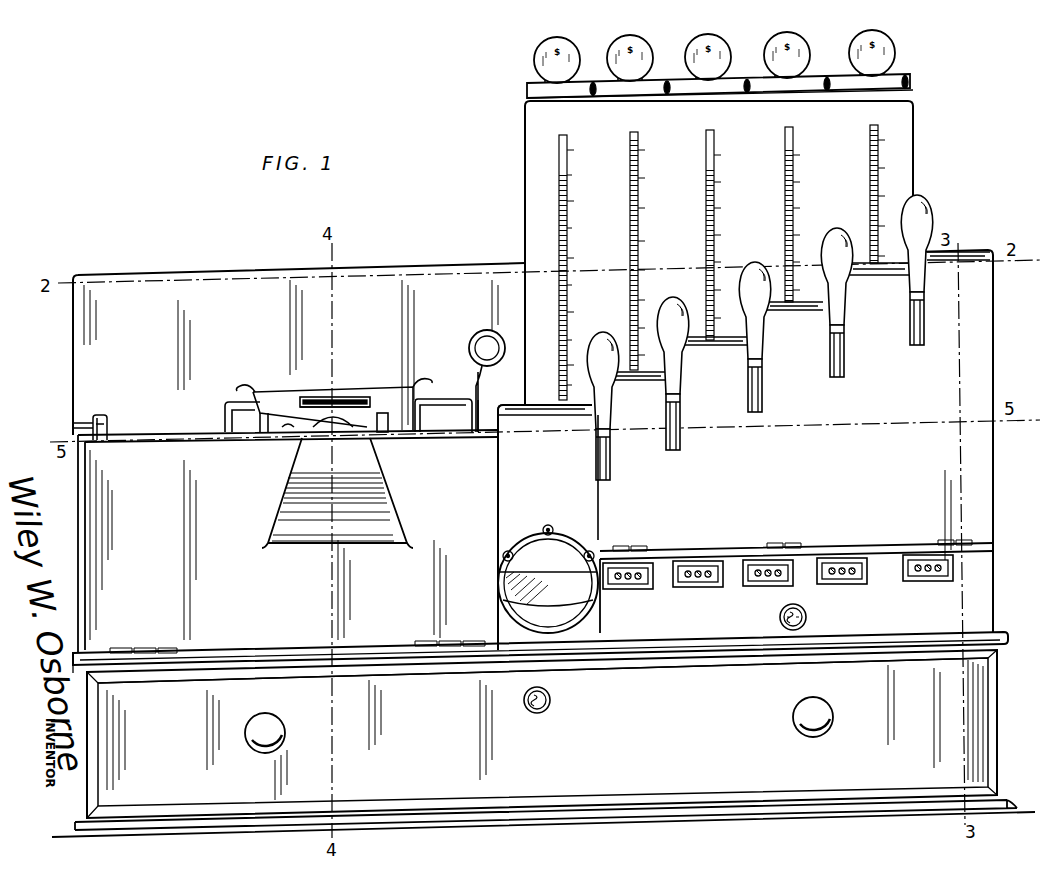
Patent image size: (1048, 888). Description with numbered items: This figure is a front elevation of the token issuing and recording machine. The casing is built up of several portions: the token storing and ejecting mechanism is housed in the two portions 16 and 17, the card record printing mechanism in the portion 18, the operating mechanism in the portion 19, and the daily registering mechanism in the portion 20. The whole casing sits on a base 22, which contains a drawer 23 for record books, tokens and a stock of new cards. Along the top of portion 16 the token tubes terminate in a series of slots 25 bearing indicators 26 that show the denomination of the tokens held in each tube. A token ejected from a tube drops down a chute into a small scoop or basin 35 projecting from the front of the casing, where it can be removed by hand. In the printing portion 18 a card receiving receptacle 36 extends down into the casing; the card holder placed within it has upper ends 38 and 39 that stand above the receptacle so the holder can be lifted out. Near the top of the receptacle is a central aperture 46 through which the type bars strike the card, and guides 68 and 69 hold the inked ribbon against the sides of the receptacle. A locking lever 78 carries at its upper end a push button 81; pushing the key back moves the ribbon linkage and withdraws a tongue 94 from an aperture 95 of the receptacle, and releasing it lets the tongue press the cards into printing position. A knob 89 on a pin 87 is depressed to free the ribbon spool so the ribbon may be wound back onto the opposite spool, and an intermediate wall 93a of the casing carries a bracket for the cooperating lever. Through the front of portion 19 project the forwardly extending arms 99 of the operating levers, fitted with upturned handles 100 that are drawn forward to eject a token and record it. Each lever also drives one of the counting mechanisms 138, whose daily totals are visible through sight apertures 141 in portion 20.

The casing portion 16 is at (907, 126).
The casing portion 17 is at (363, 270).
The casing portion 18 is at (98, 522).
The casing portion 19 is at (962, 262).
The casing portion 20 is at (985, 598).
The base 22 is at (977, 718).
The drawer 23 is at (967, 678).
The slots 25 is at (530, 92).
The indicators 26 is at (886, 54).
The scoop or basin 35 is at (533, 633).
The card receiving receptacle 36 is at (275, 395).
The upper end of holder 38 is at (240, 386).
The upper end of holder 39 is at (430, 382).
The aperture 46 is at (337, 482).
The guide 68 is at (283, 433).
The guide 69 is at (385, 428).
The locking lever 78 is at (468, 419).
The push button 81 is at (469, 350).
The pin 87 is at (76, 437).
The knob 89 is at (90, 426).
The intermediate wall 93a is at (497, 498).
The tongue 94 is at (318, 397).
The aperture 95 is at (350, 398).
The forwardly extending arms 99 is at (920, 348).
The upturned handles 100 is at (762, 340).
The counting mechanisms 138 is at (840, 576).
The sight apertures 141 is at (698, 582).